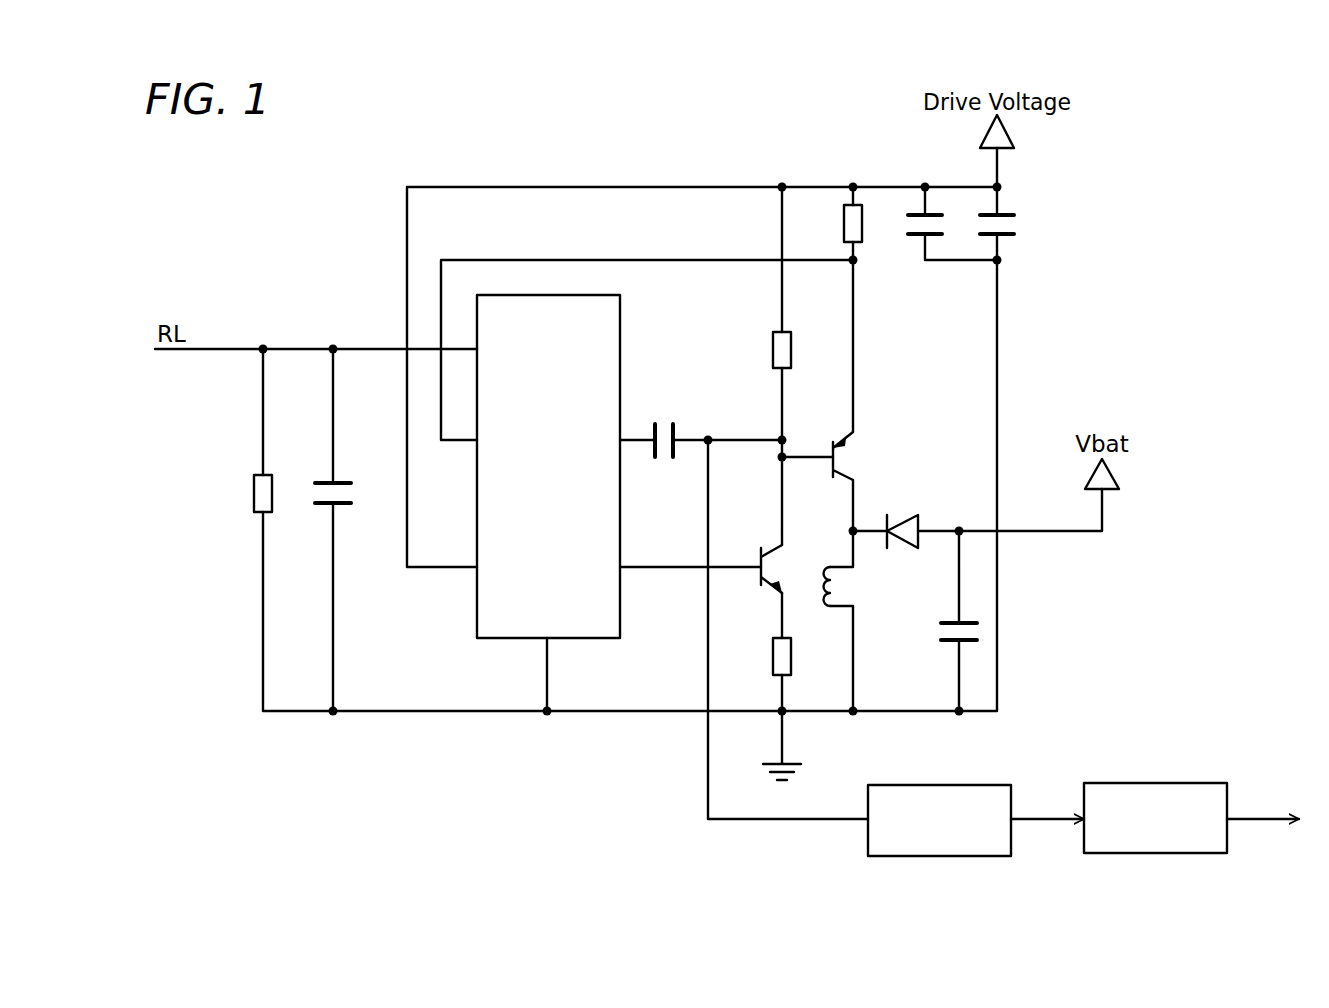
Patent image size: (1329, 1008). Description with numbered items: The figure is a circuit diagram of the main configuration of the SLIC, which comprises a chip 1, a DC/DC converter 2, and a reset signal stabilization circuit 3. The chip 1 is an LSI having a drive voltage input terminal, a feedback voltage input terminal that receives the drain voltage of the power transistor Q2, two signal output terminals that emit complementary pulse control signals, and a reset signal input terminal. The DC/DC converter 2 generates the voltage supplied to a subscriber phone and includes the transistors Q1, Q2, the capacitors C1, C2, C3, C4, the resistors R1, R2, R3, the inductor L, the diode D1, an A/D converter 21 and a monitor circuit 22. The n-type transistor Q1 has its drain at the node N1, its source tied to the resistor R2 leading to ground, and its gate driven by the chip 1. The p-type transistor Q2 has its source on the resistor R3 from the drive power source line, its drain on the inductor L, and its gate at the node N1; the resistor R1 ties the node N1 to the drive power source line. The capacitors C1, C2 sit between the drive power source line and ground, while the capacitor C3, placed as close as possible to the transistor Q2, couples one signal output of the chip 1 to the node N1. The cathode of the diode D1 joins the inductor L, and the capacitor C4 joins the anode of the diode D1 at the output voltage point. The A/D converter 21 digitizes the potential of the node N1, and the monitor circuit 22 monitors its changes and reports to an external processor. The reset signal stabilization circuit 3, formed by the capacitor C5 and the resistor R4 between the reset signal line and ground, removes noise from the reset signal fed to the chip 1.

The chip 1 is at (477, 496).
The DC/DC converter 2 is at (1107, 321).
The reset signal stabilization circuit 3 is at (298, 263).
The A/D converter 21 is at (968, 785).
The monitor circuit 22 is at (1183, 783).
The resistor R1 is at (772, 350).
The resistor R2 is at (772, 656).
The resistor R3 is at (862, 225).
The resistor R4 is at (254, 493).
The capacitor C1 is at (1005, 219).
The capacitor C2 is at (915, 238).
The capacitor C3 is at (674, 428).
The capacitor C4 is at (948, 617).
The capacitor C5 is at (340, 478).
The n-type transistor Q1 is at (768, 553).
The power transistor Q2 is at (838, 447).
The diode D1 is at (905, 515).
The inductor L is at (836, 585).
The node N1 is at (804, 435).